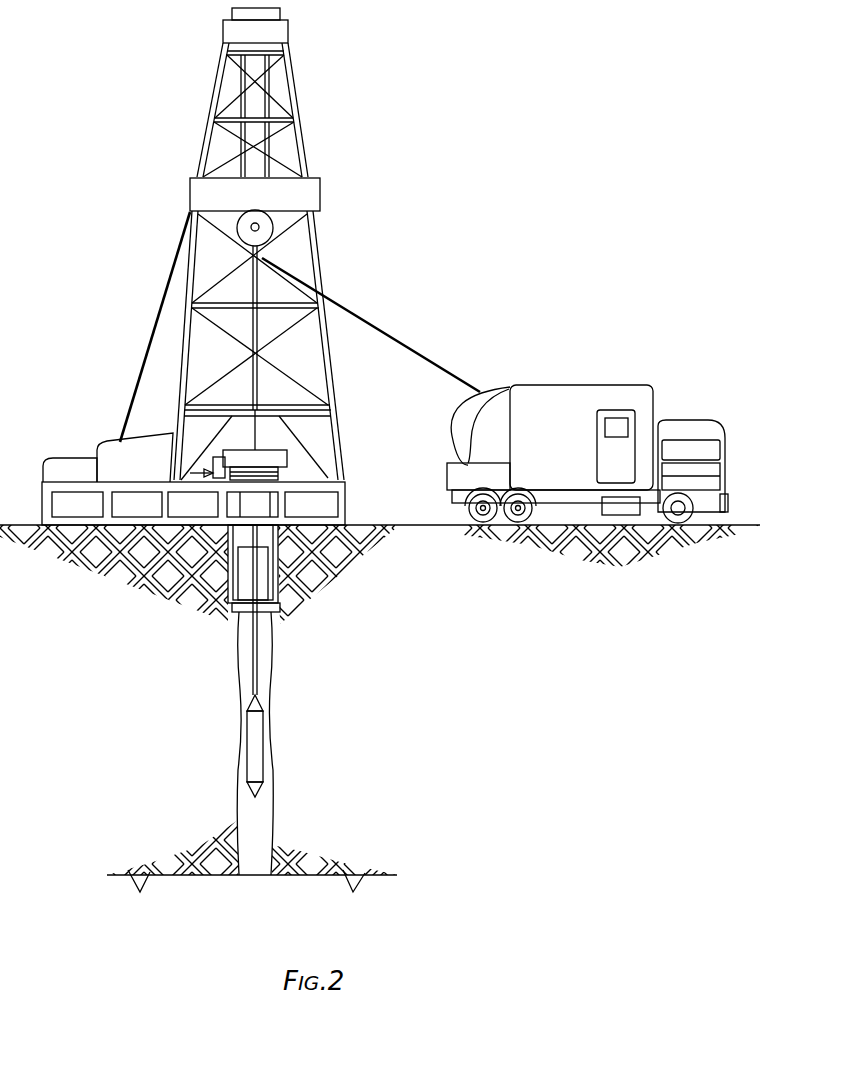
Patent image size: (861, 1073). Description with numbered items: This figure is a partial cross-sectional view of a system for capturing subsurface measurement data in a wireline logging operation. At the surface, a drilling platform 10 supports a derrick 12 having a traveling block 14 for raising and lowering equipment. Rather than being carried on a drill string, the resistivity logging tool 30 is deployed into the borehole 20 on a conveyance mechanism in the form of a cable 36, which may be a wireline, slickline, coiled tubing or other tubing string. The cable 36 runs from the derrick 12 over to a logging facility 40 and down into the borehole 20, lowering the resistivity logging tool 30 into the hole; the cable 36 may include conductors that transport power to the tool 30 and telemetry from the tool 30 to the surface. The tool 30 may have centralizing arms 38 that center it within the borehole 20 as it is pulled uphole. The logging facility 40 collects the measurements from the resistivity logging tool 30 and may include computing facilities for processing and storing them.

The drilling platform 10 is at (347, 505).
The derrick 12 is at (297, 77).
The traveling block 14 is at (250, 247).
The borehole 20 is at (243, 682).
The resistivity logging tool 30 is at (270, 723).
The cable 36 is at (377, 328).
The centralizing arms 38 is at (272, 760).
The logging facility 40 is at (612, 387).